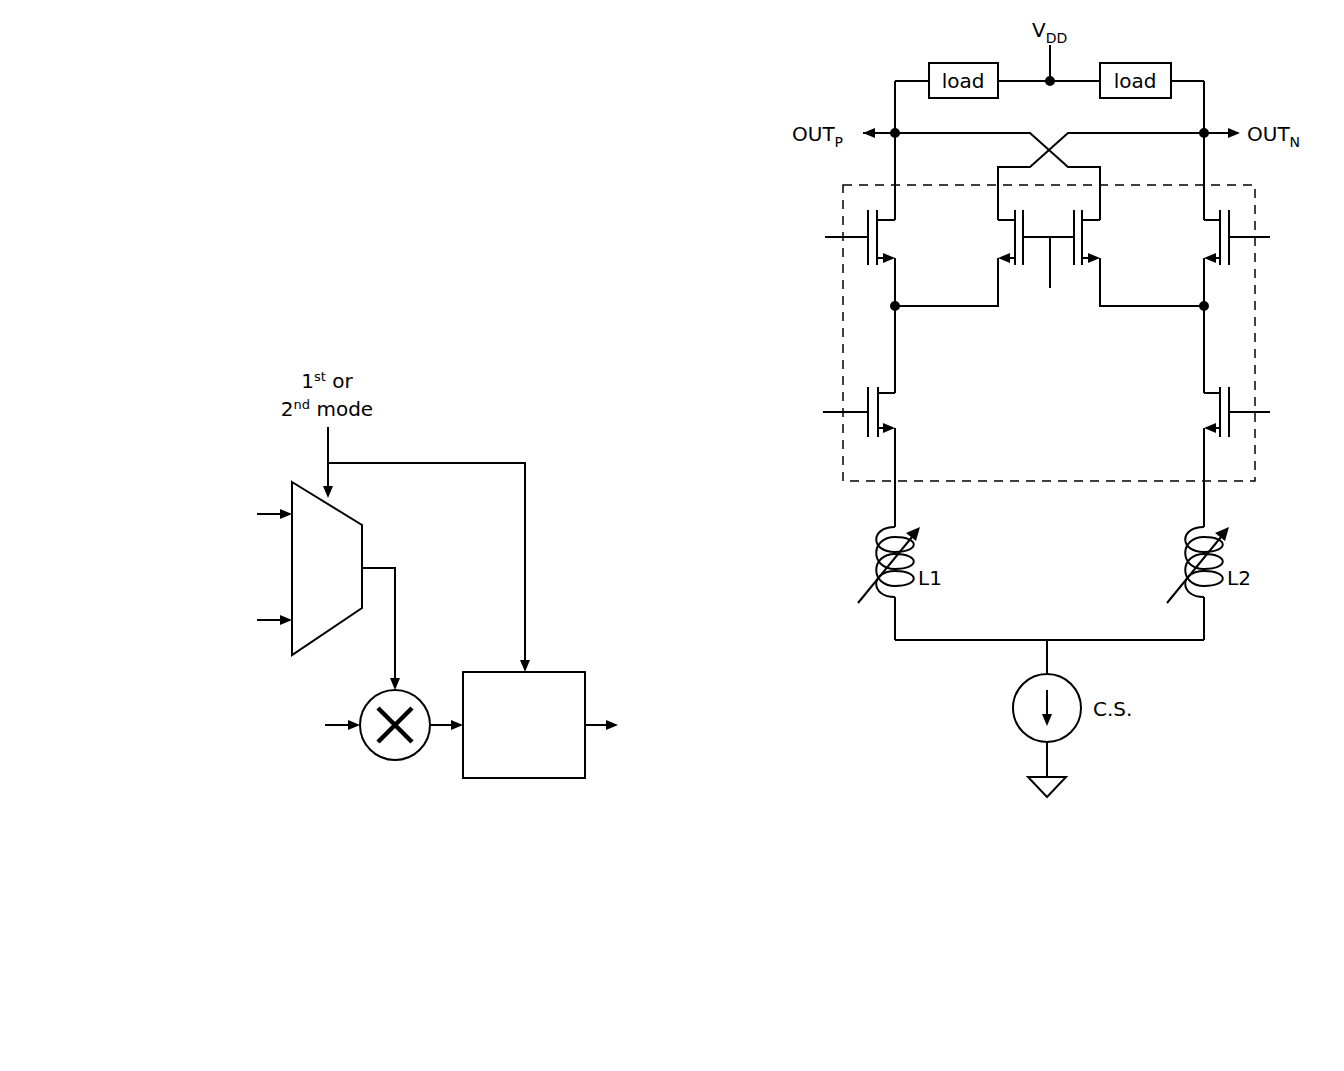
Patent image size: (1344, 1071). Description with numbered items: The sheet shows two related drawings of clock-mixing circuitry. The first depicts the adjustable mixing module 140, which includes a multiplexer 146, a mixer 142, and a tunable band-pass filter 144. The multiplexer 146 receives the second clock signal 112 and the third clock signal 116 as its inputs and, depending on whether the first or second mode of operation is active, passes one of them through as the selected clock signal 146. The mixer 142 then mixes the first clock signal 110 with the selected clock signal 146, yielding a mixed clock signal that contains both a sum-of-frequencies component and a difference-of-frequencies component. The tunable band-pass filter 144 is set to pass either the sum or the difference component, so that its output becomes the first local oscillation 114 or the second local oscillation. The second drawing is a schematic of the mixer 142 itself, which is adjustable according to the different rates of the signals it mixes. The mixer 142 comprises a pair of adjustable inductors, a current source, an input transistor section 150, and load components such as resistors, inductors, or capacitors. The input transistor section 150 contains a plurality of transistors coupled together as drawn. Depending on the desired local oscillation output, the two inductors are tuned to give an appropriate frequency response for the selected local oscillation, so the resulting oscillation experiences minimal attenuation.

In FIG. 6, the adjustable mixing module 140 is at (395, 879).
In FIG. 6, the multiplexer 146 is at (430, 553).
In FIG. 7, the multiplexer 146 is at (1048, 269).
In FIG. 6, the second clock signal 112 is at (194, 515).
In FIG. 6, the third clock signal 116 is at (210, 619).
In FIG. 6, the first clock signal 110 is at (269, 725).
In FIG. 7, the first clock signal 110 is at (1048, 412).
In FIG. 6, the mixer 142 is at (411, 742).
In FIG. 7, the mixer 142 is at (1047, 879).
In FIG. 6, the tunable band-pass filter 144 is at (524, 725).
In FIG. 6, the first local oscillation 114 is at (703, 741).
In FIG. 7, the input transistor section 150 is at (833, 486).